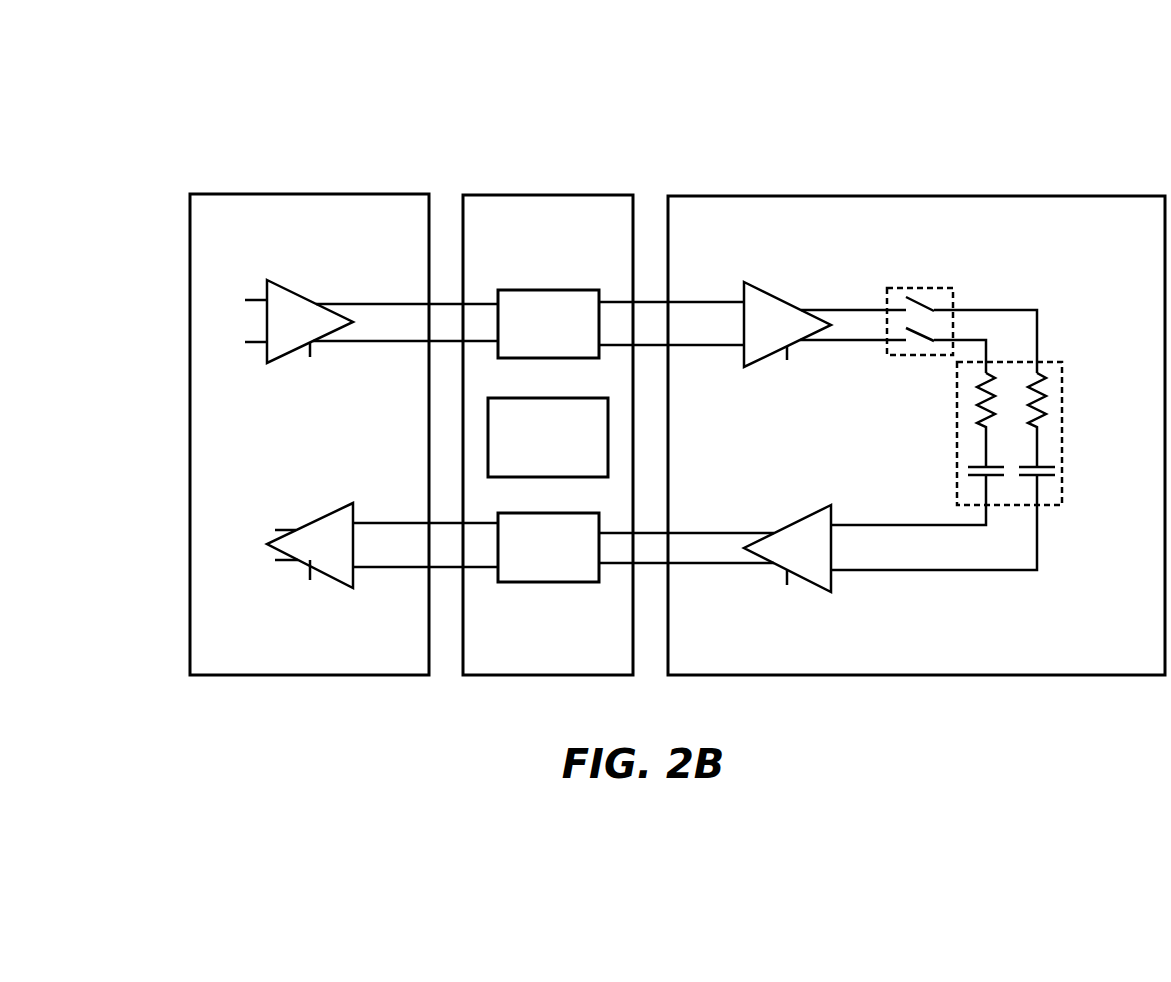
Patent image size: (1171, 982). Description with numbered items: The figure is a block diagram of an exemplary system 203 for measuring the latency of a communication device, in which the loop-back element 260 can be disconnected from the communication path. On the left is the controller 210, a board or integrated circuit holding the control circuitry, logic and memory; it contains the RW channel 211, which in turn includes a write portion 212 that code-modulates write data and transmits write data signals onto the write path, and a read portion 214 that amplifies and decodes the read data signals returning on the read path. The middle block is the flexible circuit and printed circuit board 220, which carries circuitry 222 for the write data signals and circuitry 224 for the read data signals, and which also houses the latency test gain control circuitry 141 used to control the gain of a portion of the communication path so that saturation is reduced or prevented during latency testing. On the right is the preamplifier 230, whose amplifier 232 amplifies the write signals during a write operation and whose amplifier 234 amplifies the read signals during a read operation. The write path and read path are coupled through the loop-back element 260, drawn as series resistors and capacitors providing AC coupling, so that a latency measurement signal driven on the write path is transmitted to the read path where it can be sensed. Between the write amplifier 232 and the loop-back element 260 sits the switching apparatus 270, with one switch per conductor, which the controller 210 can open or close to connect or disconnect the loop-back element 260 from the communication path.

The exemplary system 203 is at (182, 99).
The controller 210 is at (215, 193).
The RW channel 211 is at (367, 245).
The write portion 212 is at (299, 321).
The read portion 214 is at (310, 545).
The flexible circuit and printed circuit board 220 is at (488, 195).
The write transmission circuitry 222 is at (548, 324).
The read transmission circuitry 224 is at (548, 547).
The latency test gain control circuitry 141 is at (560, 398).
The preamplifier 230 is at (693, 196).
The write amplifier 232 is at (815, 324).
The read amplifier 234 is at (890, 533).
The loop-back element 260 is at (957, 447).
The switching apparatus 270 is at (907, 288).